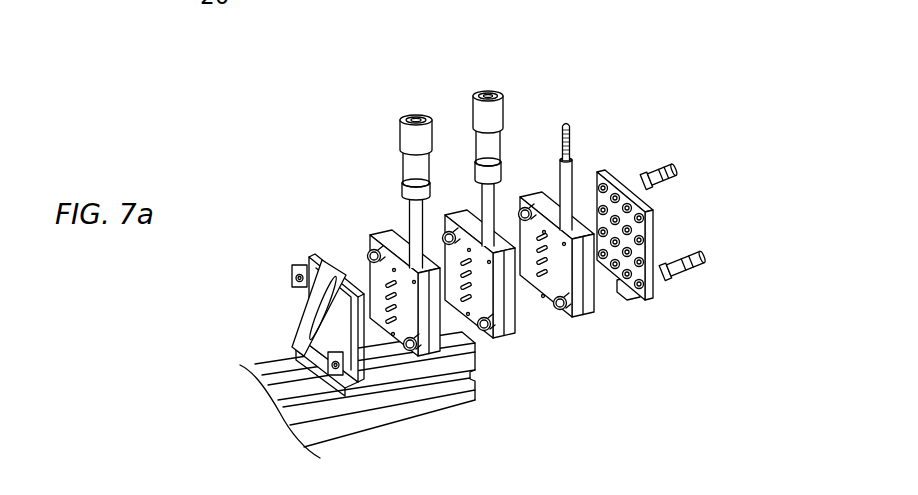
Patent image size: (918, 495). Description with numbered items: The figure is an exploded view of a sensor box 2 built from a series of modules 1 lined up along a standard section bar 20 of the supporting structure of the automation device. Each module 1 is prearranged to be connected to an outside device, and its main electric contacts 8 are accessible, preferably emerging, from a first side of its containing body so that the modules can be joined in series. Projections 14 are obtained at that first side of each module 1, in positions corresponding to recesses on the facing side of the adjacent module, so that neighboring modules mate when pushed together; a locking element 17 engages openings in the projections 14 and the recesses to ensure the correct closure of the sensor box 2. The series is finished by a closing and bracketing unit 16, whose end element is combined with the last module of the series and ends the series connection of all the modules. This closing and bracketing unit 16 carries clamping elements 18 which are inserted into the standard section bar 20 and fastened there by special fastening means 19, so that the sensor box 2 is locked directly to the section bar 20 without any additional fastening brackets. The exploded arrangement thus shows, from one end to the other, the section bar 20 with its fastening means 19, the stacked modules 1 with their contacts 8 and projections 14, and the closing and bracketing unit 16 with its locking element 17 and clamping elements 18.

The module 1 is at (540, 168).
The sensor box 2 is at (676, 104).
The main electric contacts 8 is at (388, 322).
The projections 14 is at (558, 308).
The closing and bracketing unit 16 is at (318, 10).
The locking element 17 is at (676, 174).
The clamping elements 18 is at (658, 292).
The fastening means 19 is at (318, 350).
The standard section bars 20 is at (278, 362).